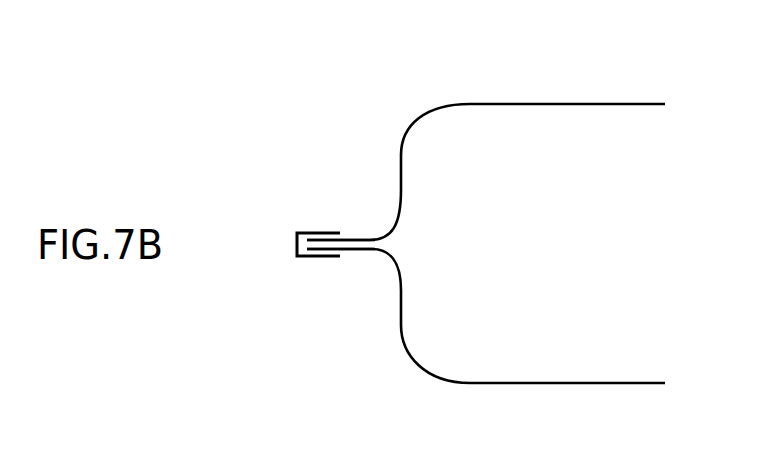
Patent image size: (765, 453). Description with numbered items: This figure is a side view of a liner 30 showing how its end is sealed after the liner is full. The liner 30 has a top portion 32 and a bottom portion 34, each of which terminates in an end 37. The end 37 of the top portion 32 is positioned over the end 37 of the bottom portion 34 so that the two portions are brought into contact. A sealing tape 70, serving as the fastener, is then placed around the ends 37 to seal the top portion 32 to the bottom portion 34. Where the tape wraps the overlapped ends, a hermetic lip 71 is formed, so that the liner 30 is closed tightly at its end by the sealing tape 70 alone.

The liner 30 is at (486, 236).
The top portion 32 is at (567, 104).
The bottom portion 34 is at (480, 384).
The ends 37 is at (366, 233).
The sealing tape 70 is at (289, 238).
The lip 71 is at (310, 228).